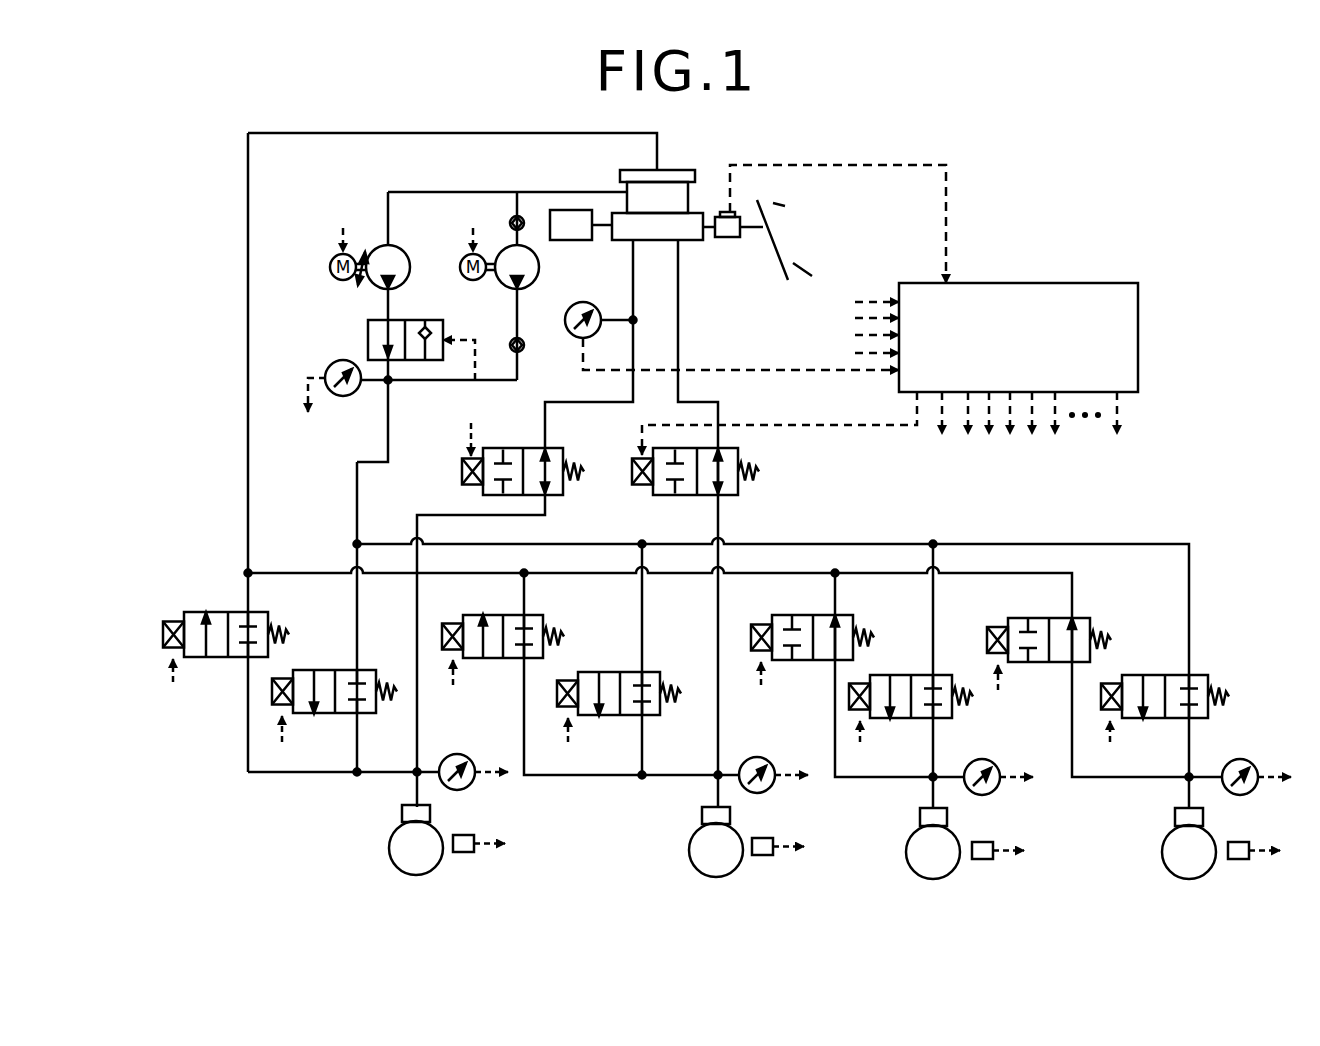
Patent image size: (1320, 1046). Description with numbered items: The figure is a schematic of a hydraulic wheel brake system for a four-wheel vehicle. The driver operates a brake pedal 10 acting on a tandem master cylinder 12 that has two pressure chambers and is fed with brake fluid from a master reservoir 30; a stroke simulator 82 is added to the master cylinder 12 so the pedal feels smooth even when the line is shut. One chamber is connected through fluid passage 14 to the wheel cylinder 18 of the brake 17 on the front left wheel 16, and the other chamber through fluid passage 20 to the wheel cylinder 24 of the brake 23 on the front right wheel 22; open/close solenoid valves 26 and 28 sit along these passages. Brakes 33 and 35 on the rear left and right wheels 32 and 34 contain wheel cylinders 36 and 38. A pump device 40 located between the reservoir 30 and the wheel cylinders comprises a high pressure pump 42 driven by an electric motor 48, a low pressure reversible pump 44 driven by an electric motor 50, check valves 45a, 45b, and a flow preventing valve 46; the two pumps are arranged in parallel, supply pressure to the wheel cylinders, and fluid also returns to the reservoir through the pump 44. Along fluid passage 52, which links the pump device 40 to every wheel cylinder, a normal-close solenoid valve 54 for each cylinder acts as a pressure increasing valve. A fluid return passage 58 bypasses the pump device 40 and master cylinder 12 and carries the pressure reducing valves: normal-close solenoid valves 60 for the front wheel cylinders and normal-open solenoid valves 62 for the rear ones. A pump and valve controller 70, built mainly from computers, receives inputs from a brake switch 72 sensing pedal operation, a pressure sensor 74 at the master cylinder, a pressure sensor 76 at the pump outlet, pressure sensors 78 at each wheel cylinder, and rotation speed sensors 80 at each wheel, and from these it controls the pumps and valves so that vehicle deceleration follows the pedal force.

The brake pedal 10 is at (777, 248).
The master cylinder 12 is at (695, 238).
The fluid passage 14 is at (680, 347).
The front left wheel 16 is at (705, 857).
The brake 17 is at (686, 843).
The wheel cylinder 18 is at (702, 816).
The fluid passage 20 is at (633, 340).
The front right wheel 22 is at (405, 857).
The brake 23 is at (386, 843).
The wheel cylinder 24 is at (402, 812).
The open/close solenoid valve 26 is at (722, 496).
The open/close solenoid valve 28 is at (553, 458).
The master reservoir 30 is at (690, 170).
The rear left wheel 32 is at (1178, 860).
The brake 33 is at (1160, 846).
The rear right wheel 34 is at (922, 860).
The brake 35 is at (903, 846).
The wheel cylinder 36 is at (1175, 816).
The wheel cylinder 38 is at (922, 816).
The pump device 40 is at (355, 297).
The high pressure pump 42 is at (507, 255).
The low pressure pump 44 is at (378, 258).
The check valve 45a is at (511, 345).
The check valve 45b is at (521, 215).
The flow preventing valve 46 is at (410, 362).
The electric motor 48 is at (462, 265).
The electric motor 50 is at (330, 275).
The fluid passage 52 is at (355, 520).
The normal-close solenoid valve 54 is at (330, 670).
The fluid return passage 58 is at (247, 462).
The normal-close solenoid valve 60 is at (222, 612).
The normal-open solenoid valve 62 is at (798, 620).
The pump and valve controller 70 is at (1085, 297).
The brake switch 72 is at (740, 222).
The pressure sensor 74 is at (580, 340).
The pressure sensor 76 is at (340, 396).
The pressure sensor 78 is at (465, 758).
The rotation speed sensor 80 is at (466, 835).
The stroke simulator 82 is at (570, 238).